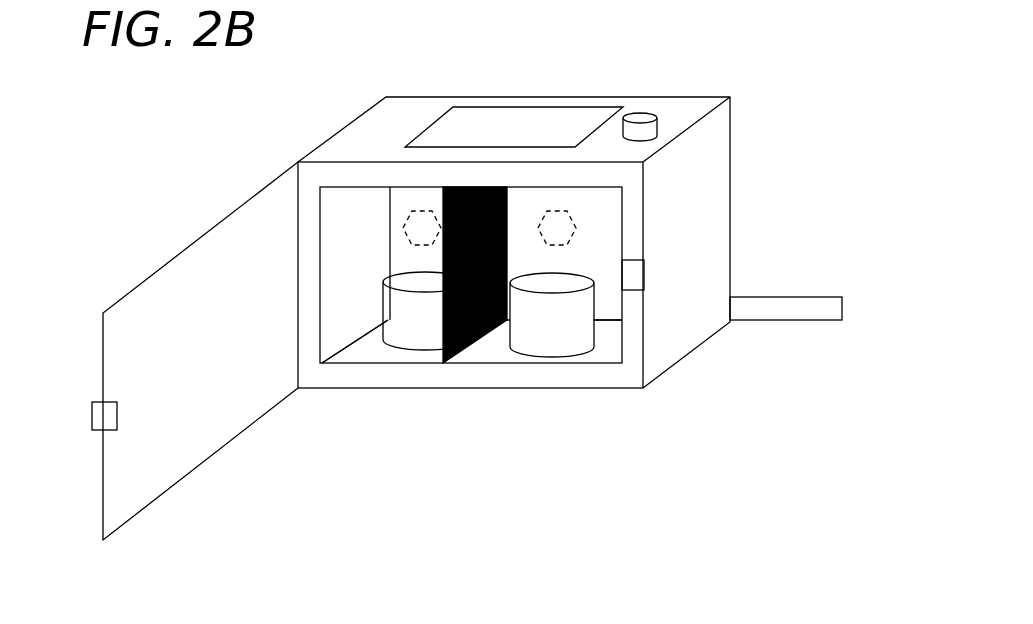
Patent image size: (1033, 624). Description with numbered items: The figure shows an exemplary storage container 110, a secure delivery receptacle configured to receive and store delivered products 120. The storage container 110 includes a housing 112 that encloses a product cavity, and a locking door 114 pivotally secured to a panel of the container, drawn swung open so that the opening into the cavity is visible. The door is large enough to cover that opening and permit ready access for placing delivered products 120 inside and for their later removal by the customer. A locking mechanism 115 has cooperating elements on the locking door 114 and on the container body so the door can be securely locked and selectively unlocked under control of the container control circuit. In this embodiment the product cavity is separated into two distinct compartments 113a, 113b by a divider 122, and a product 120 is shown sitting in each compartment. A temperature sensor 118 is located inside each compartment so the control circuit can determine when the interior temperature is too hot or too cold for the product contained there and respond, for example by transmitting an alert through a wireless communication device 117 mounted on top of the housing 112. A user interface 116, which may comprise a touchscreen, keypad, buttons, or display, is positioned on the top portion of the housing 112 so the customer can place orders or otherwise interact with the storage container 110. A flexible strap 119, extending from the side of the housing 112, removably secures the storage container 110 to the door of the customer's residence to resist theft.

The storage container 110 is at (600, 73).
The housing 112 is at (710, 205).
The first compartment 113a is at (365, 355).
The second compartment 113b is at (605, 355).
The locking door 114 is at (185, 287).
The locking mechanism 115 is at (105, 412).
The user interface 116 is at (495, 125).
The wireless communication device 117 is at (650, 130).
The temperature sensor 118 is at (403, 228).
The flexible strap 119 is at (760, 308).
The products 120 is at (412, 335).
The divider 122 is at (468, 350).